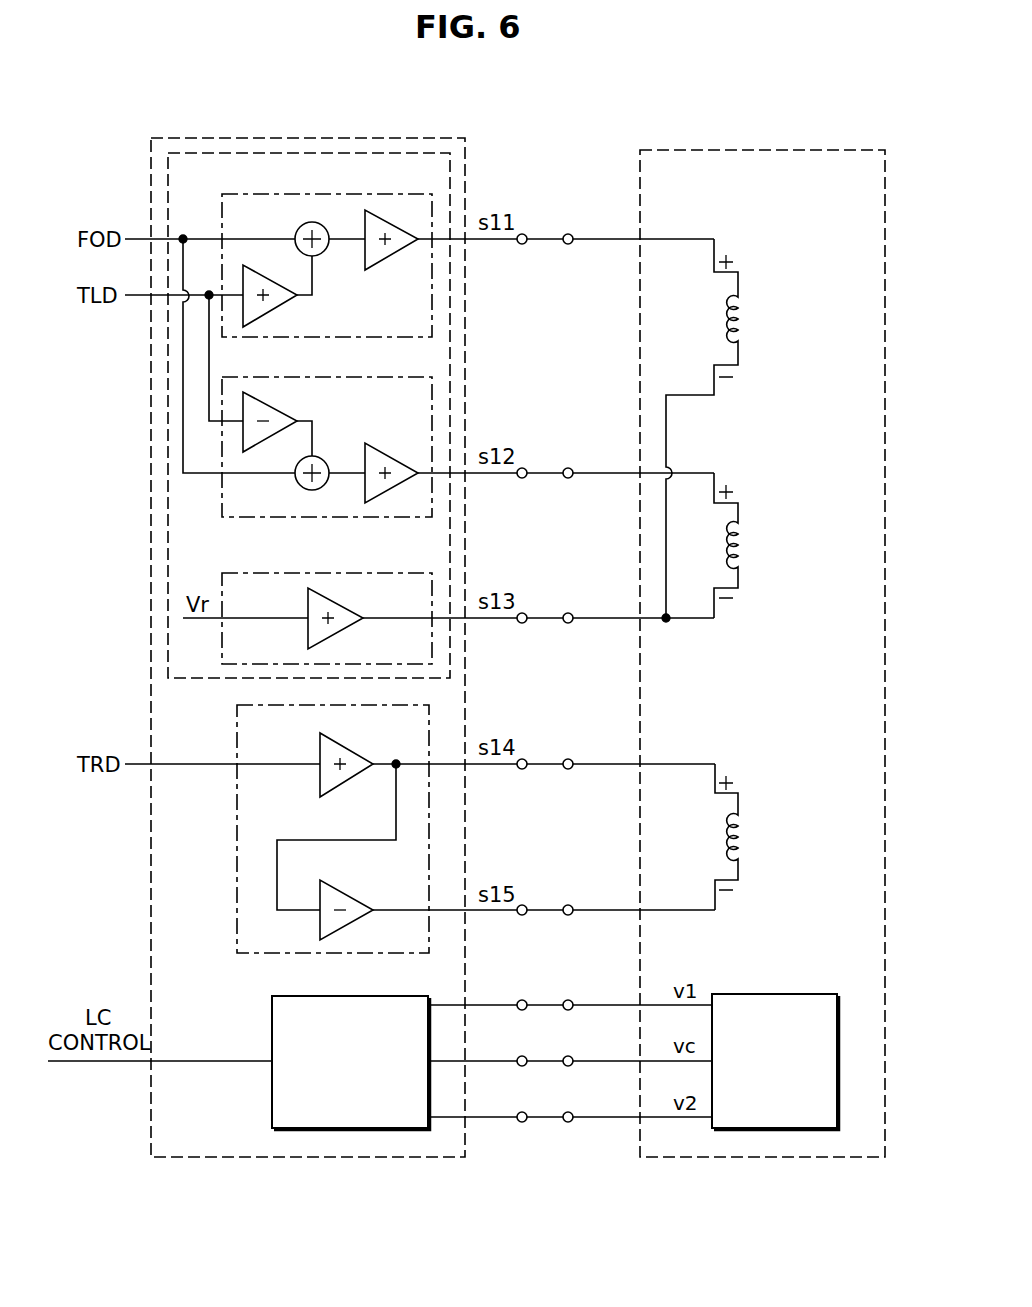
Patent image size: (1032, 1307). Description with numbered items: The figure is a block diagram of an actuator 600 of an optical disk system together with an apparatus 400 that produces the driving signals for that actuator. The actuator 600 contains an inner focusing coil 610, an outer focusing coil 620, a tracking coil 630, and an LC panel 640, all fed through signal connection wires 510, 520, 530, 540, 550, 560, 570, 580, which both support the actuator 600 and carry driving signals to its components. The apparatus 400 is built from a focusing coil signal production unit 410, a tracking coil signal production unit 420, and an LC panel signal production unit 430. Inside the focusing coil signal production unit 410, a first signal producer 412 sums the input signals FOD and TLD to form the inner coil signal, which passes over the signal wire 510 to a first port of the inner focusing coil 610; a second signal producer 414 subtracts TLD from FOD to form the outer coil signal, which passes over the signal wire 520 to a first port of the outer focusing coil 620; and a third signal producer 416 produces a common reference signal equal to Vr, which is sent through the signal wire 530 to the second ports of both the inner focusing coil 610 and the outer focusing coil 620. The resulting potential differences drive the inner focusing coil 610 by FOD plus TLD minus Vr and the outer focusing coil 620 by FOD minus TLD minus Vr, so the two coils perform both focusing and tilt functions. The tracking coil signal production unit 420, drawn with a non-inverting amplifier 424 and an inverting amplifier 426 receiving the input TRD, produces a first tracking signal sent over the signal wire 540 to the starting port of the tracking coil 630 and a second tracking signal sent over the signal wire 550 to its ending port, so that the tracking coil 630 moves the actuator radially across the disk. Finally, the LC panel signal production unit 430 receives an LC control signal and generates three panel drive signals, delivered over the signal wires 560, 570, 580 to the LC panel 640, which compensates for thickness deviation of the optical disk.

The apparatus 400 is at (323, 137).
The focusing coil signal production unit 410 is at (168, 452).
The first signal producer 412 is at (327, 193).
The second signal producer 414 is at (327, 376).
The third signal producer 416 is at (327, 572).
The tracking coil signal production unit 420 is at (237, 826).
The non-inverting amplifier 424 is at (345, 750).
The inverting amplifier 426 is at (345, 896).
The LC panel signal production unit 430 is at (352, 996).
The signal wire 510 is at (543, 234).
The signal wire 520 is at (543, 468).
The signal connection wire 530 is at (543, 613).
The signal wire 540 is at (543, 759).
The signal wire 550 is at (543, 905).
The signal connection wire 560 is at (543, 1000).
The signal connection wire 570 is at (543, 1056).
The signal connection wire 580 is at (543, 1112).
The actuator 600 is at (765, 149).
The inner focusing coil 610 is at (769, 428).
The outer focusing coil 620 is at (767, 547).
The tracking coil 630 is at (792, 837).
The LC panel 640 is at (778, 994).